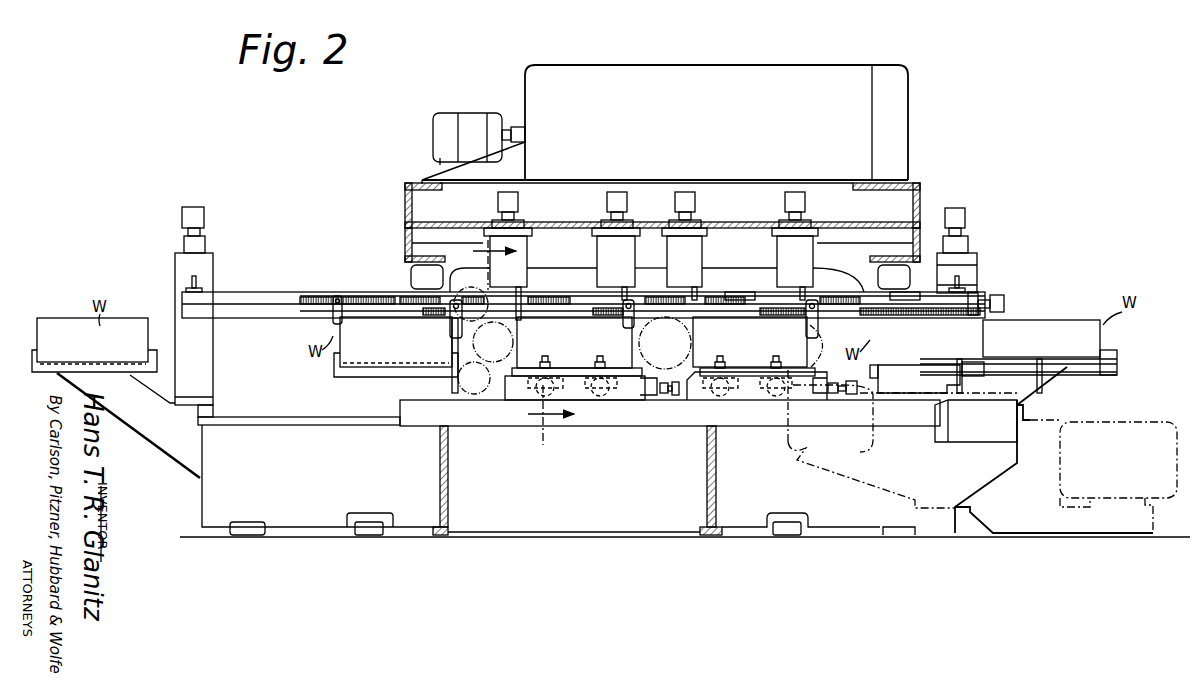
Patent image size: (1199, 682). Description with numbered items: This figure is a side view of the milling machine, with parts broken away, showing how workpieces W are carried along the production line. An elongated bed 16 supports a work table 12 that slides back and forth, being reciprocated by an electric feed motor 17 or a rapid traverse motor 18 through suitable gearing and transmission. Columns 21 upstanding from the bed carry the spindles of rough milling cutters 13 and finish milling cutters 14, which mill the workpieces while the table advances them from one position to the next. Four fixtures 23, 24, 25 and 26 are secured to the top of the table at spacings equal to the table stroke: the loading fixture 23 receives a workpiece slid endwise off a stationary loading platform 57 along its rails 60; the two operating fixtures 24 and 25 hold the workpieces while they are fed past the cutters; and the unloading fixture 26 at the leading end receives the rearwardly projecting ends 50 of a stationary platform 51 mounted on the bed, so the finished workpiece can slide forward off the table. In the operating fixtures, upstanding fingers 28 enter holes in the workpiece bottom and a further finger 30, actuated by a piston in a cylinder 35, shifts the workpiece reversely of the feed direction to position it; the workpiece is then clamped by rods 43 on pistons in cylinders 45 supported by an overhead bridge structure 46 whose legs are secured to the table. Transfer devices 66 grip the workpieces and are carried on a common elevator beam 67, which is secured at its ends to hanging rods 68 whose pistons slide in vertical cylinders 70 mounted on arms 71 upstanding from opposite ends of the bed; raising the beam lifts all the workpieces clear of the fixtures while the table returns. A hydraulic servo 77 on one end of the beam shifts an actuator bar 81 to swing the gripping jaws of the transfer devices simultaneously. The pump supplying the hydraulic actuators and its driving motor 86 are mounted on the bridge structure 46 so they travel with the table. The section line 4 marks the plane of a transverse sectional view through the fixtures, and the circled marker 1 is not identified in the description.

The machine 1 is at (530, 345).
The section line 4- 4 is at (530, 342).
The work table 12 is at (634, 428).
The rough milling cutters 13 is at (482, 340).
The finish milling cutters 14 is at (697, 332).
The bed 16 is at (215, 497).
The electric feed motor 17 is at (788, 448).
The rapid traverse motor 18 is at (1120, 420).
The columns 21 is at (440, 475).
The loading fixture 23 is at (380, 390).
The operating fixture 24 is at (515, 390).
The operating fixture 25 is at (755, 392).
The unloading fixture 26 is at (900, 375).
The upstanding fingers 28 is at (543, 356).
The upstanding finger 30 is at (824, 353).
The cylinder 35 is at (668, 394).
The clamping rods 43 is at (522, 296).
The cylinders 45 is at (516, 203).
The bridge structure 46 is at (406, 198).
The platform ends 50 is at (1118, 365).
The platform 51 is at (1030, 395).
The loading platform 57 is at (126, 422).
The rails 60 is at (42, 360).
The transfer devices 66 is at (334, 318).
The elevator beam 67 is at (290, 294).
The rods 68 is at (198, 282).
The vertical cylinders 70 is at (182, 213).
The arms 71 is at (176, 301).
The hydraulic servo 77 is at (1008, 300).
The actuator bar 81 is at (739, 300).
The driving motor 86 is at (472, 128).